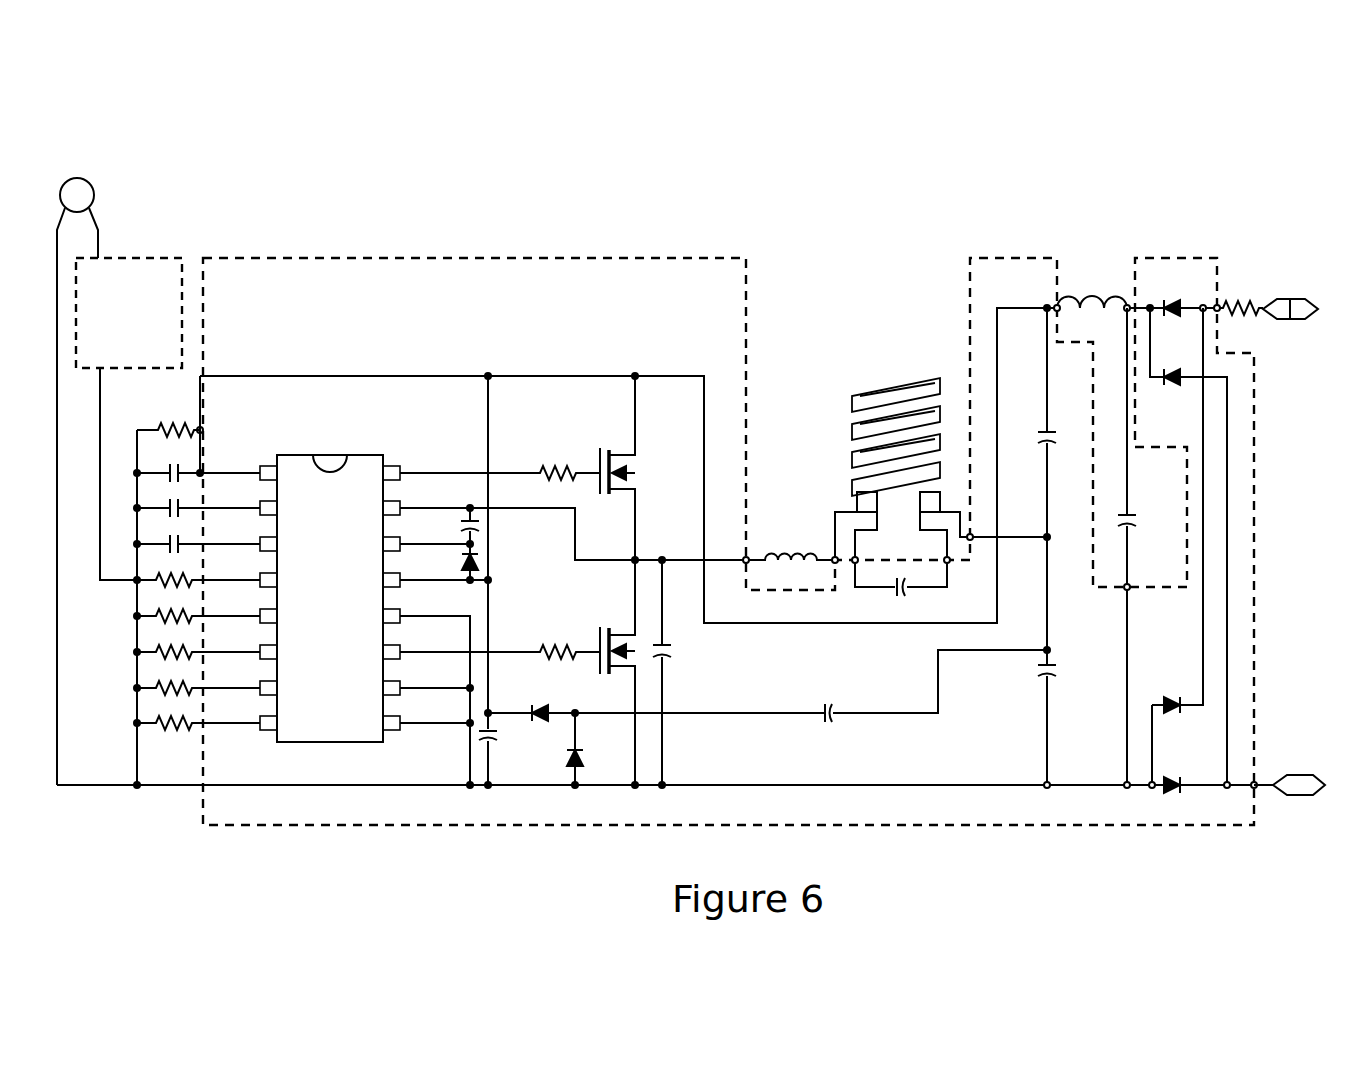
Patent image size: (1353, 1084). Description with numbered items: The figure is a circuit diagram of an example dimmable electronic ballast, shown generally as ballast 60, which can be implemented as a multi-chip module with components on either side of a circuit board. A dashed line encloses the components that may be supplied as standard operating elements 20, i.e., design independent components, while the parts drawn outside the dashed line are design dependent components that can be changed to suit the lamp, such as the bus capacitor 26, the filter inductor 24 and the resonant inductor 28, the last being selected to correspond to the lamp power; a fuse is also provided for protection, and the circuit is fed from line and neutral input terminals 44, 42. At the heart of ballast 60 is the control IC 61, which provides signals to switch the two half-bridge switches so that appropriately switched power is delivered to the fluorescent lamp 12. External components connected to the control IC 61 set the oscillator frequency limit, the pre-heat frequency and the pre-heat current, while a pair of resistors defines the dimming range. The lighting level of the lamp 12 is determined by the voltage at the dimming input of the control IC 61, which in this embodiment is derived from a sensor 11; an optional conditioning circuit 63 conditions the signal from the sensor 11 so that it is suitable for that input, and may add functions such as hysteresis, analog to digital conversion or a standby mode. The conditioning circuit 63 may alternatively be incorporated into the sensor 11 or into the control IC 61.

The sensor 11 is at (94, 186).
The conditioning circuit 63 is at (135, 262).
The standard operating elements 20 is at (296, 271).
The ballast 60 is at (634, 209).
The lamp 12 is at (890, 376).
The resonant inductor 28 is at (765, 554).
The filter inductor 24 is at (1070, 300).
The bus capacitor 26 is at (1130, 519).
The line input terminal 44 is at (1292, 299).
The neutral input terminal 42 is at (1301, 778).
The control IC 61 is at (322, 746).